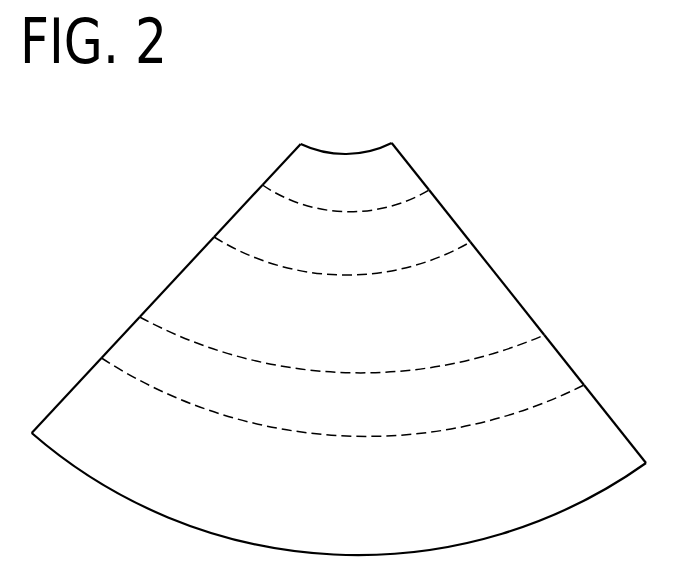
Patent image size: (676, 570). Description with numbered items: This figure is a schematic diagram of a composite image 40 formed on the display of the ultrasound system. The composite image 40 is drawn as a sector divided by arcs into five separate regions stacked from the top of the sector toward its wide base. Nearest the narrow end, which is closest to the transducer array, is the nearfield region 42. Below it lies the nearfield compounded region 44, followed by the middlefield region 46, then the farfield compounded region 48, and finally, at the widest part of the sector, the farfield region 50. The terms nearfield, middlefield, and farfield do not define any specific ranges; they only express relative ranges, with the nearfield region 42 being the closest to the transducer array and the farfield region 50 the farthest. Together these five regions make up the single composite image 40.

The composite image 40 is at (533, 134).
The nearfield region 42 is at (362, 190).
The nearfield compounded region 44 is at (362, 255).
The middlefield region 46 is at (362, 338).
The farfield compounded region 48 is at (362, 418).
The farfield region 50 is at (362, 500).